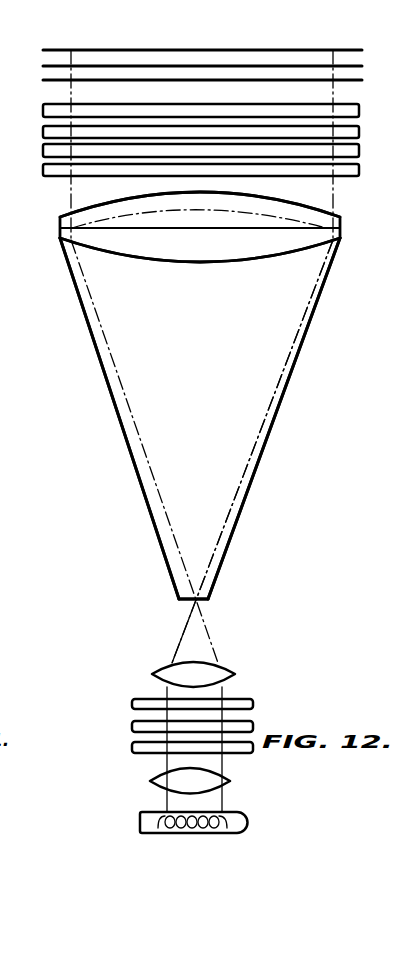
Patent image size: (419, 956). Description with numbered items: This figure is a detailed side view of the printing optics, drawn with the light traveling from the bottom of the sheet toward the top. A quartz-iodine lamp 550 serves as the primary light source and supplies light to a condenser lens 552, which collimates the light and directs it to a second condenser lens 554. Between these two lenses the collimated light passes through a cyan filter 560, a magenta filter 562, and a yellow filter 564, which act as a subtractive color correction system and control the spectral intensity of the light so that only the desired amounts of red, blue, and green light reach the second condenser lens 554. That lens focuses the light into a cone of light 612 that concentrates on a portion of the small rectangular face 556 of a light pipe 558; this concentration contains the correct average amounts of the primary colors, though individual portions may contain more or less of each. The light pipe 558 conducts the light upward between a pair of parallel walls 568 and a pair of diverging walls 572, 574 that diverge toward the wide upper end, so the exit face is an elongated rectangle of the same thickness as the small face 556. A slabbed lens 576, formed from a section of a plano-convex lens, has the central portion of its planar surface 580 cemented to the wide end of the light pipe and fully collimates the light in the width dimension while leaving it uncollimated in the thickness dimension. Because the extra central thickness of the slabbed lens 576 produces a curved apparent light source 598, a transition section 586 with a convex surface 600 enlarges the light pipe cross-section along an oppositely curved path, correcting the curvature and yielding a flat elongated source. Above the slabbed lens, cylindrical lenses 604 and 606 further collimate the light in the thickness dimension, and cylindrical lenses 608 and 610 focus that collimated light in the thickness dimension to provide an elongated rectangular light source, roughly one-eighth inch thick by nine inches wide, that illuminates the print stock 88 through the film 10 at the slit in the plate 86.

The print stock 88 is at (121, 49).
The film 10 is at (50, 66).
The plate 86 is at (52, 81).
The cylindrical lens 610 is at (347, 115).
The cylindrical lens 608 is at (350, 137).
The cylindrical lens 606 is at (350, 157).
The cylindrical lens 604 is at (350, 174).
The transition section 586 is at (192, 250).
The planar surface 580 is at (113, 231).
The apparent light source 598 is at (267, 215).
The slabbed lens 576 is at (313, 223).
The convex surface 600 is at (263, 258).
The parallel wall 568 is at (217, 371).
The diverging wall 572 is at (115, 410).
The diverging wall 574 is at (282, 407).
The light pipe 558 is at (262, 473).
The small rectangular face 556 is at (204, 600).
The cone of light 612 is at (178, 638).
The second condenser lens 554 is at (227, 672).
The cyan filter 560 is at (132, 703).
The magenta filter 562 is at (132, 725).
The yellow filter 564 is at (132, 747).
The condenser lens 552 is at (208, 782).
The quartz-iodine lamp 550 is at (247, 825).